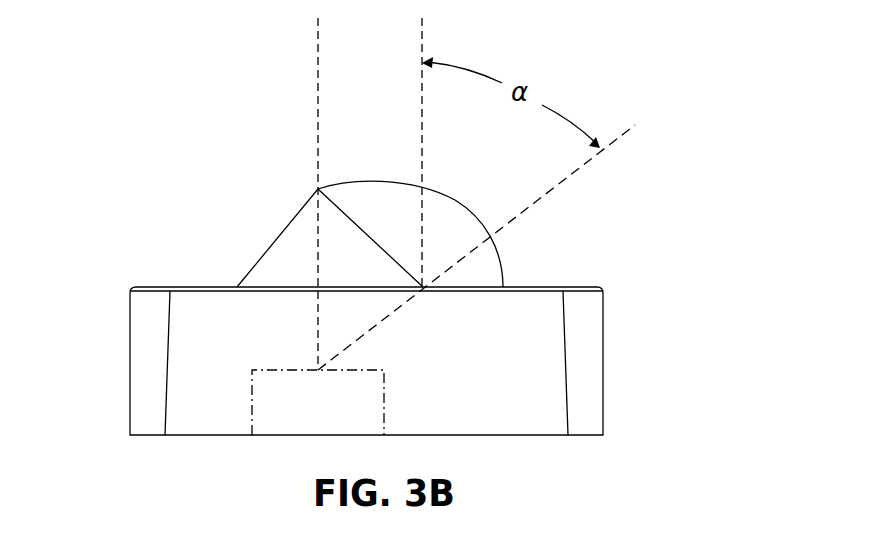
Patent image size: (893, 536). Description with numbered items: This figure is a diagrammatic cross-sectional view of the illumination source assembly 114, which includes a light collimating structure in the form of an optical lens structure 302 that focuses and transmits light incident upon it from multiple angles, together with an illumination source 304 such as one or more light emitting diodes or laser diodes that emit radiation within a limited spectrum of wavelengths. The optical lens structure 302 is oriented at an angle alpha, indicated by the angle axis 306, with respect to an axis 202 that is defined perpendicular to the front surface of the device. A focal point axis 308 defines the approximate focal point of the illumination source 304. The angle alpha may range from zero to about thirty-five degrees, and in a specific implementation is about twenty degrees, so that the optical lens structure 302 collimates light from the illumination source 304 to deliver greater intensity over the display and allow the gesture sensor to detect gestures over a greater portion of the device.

The illumination source assembly 114 is at (185, 209).
The axis 202 is at (422, 50).
The optical lens structure 302 is at (480, 265).
The illumination source 304 is at (349, 405).
The angle axis 306 is at (618, 141).
The focal point axis 308 is at (318, 75).